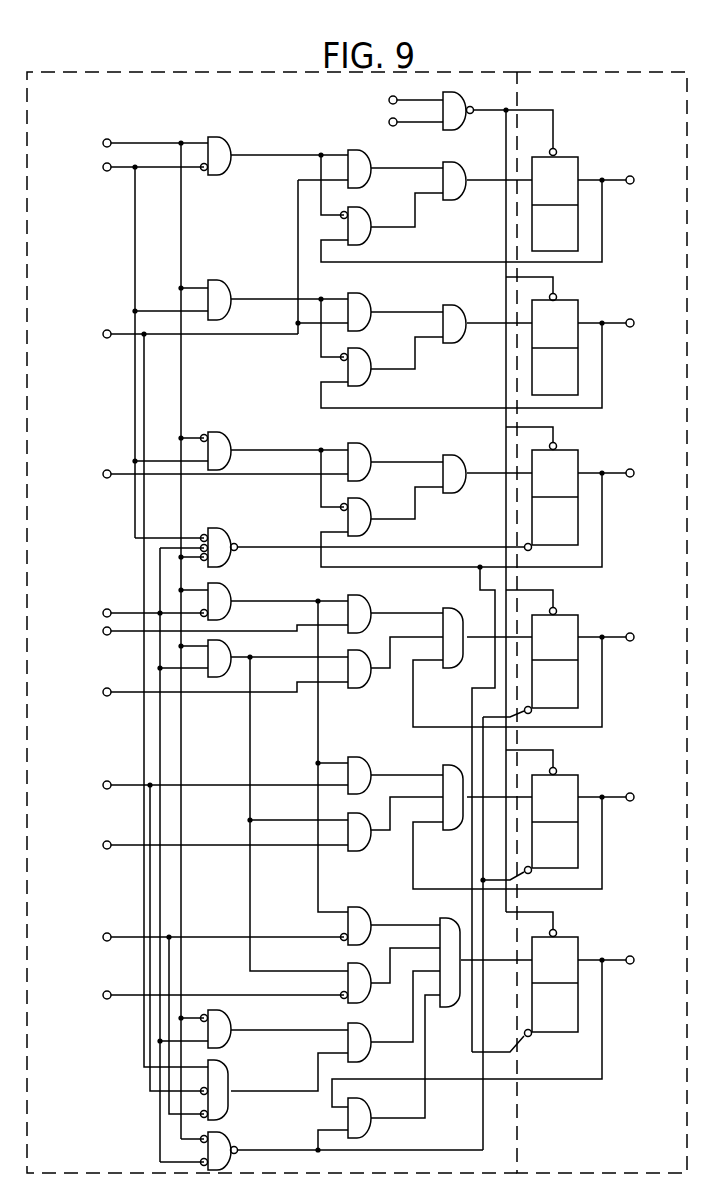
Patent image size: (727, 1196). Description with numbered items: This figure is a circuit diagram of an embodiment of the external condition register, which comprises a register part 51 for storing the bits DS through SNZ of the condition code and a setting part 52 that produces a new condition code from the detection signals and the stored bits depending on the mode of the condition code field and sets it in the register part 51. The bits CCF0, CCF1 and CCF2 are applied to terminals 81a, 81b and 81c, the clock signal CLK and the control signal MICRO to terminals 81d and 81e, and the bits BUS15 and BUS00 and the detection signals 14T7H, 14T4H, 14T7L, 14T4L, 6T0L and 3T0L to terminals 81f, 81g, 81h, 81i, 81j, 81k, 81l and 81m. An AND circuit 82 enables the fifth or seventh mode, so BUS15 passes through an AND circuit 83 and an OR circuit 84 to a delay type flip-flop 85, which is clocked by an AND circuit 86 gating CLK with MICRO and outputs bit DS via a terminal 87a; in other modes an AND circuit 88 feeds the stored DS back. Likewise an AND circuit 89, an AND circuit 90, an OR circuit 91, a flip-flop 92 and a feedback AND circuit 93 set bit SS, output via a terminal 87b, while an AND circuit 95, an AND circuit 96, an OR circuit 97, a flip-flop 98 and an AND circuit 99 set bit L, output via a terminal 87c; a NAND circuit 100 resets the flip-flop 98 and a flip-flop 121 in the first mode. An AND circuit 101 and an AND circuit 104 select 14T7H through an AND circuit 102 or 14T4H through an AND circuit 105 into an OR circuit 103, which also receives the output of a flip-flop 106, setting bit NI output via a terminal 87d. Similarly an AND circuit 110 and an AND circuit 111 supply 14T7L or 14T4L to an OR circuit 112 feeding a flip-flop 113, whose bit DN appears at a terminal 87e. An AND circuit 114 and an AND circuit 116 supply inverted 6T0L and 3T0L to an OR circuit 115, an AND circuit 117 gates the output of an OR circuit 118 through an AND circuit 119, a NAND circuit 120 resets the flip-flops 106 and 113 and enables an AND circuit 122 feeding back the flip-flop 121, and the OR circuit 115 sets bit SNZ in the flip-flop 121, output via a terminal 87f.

The register part 51 is at (658, 63).
The setting part 52 is at (215, 62).
The terminal 81a is at (107, 172).
The terminal 81b is at (108, 608).
The terminal 81c is at (108, 138).
The terminal 81d is at (396, 97).
The terminal 81e is at (396, 119).
The terminal 81f is at (108, 329).
The terminal 81g is at (108, 469).
The terminal 81h is at (107, 636).
The terminal 81i is at (107, 697).
The terminal 81j is at (108, 780).
The terminal 81k is at (108, 840).
The terminal 81l is at (108, 932).
The terminal 81m is at (108, 990).
The AND circuit 82 is at (222, 137).
The AND circuit 83 is at (362, 150).
The OR circuit 84 is at (457, 162).
The delay type flip-flop 85 is at (562, 157).
The AND circuit 86 is at (457, 92).
The terminal 87a is at (631, 175).
The terminal 87b is at (631, 318).
The terminal 87c is at (634, 459).
The terminal 87d is at (634, 623).
The terminal 87e is at (634, 783).
The terminal 87f is at (634, 946).
The AND circuit 88 is at (368, 203).
The AND circuit 89 is at (222, 280).
The AND circuit 90 is at (362, 293).
The OR circuit 91 is at (457, 305).
The flip-flop 92 is at (562, 300).
The AND circuit 93 is at (362, 348).
The AND circuit 95 is at (222, 432).
The AND circuit 96 is at (362, 443).
The OR circuit 97 is at (463, 451).
The flip-flop 98 is at (562, 450).
The AND circuit 99 is at (368, 494).
The NAND circuit 100 is at (222, 528).
The AND circuit 101 is at (222, 583).
The AND circuit 102 is at (368, 591).
The OR circuit 103 is at (463, 603).
The AND circuit 104 is at (228, 648).
The AND circuit 105 is at (364, 688).
The flip-flop 106 is at (562, 615).
The AND circuit 110 is at (362, 757).
The AND circuit 111 is at (364, 851).
The OR circuit 112 is at (455, 759).
The flip-flop 113 is at (562, 775).
The AND circuit 114 is at (360, 907).
The OR circuit 115 is at (452, 912).
The AND circuit 116 is at (362, 1003).
The AND circuit 117 is at (228, 1006).
The OR circuit 118 is at (234, 1062).
The AND circuit 119 is at (364, 1062).
The NAND circuit 120 is at (224, 1132).
The flip-flop 121 is at (562, 937).
The AND circuit 122 is at (368, 1094).